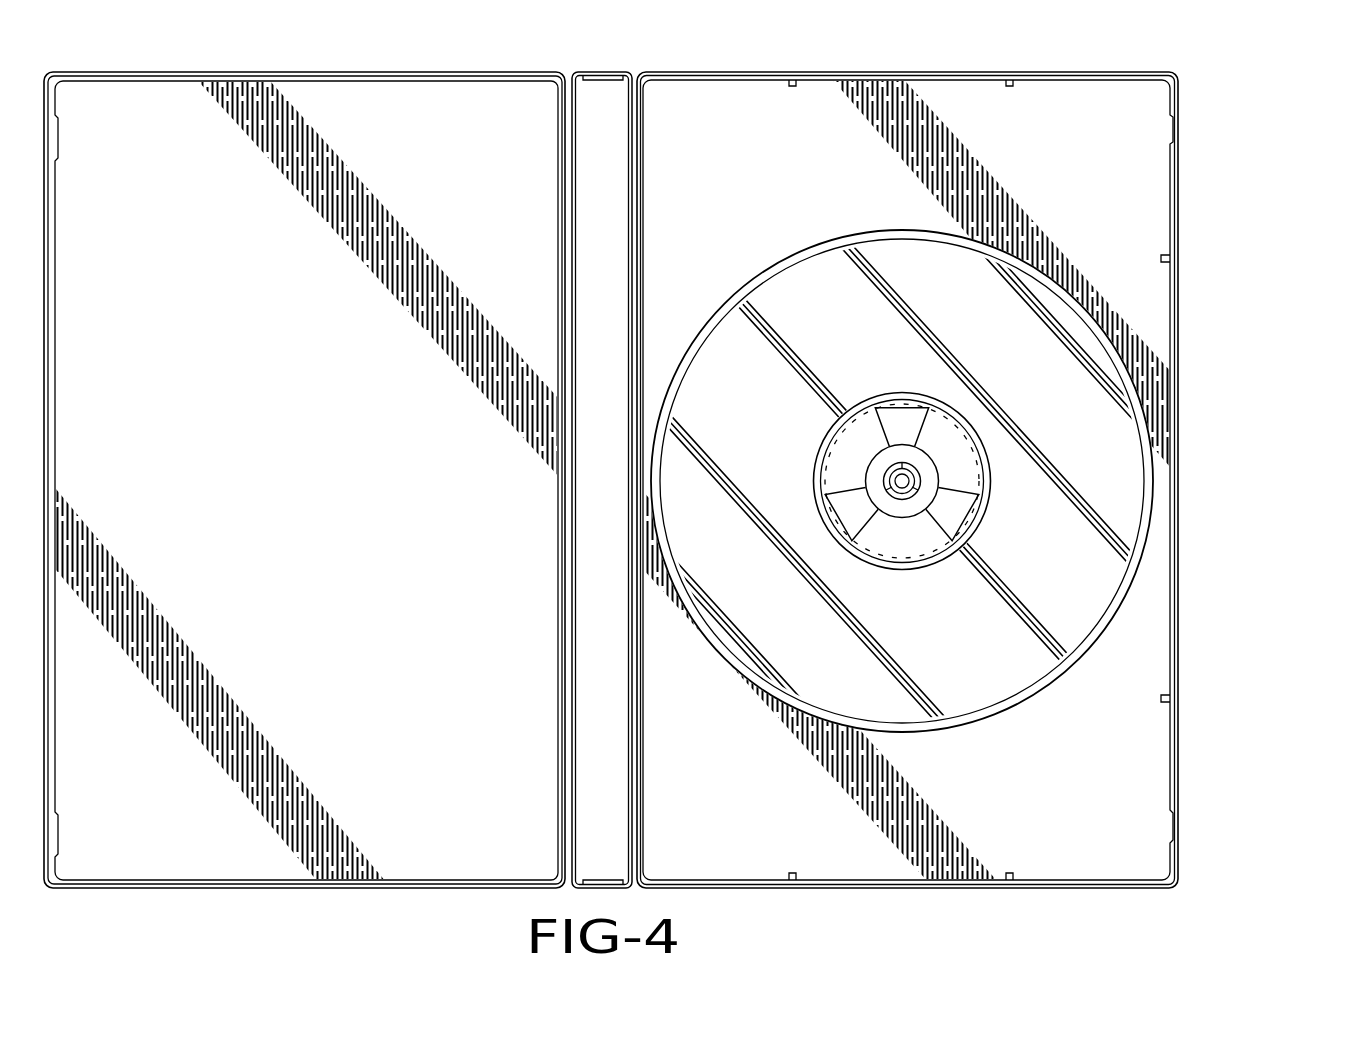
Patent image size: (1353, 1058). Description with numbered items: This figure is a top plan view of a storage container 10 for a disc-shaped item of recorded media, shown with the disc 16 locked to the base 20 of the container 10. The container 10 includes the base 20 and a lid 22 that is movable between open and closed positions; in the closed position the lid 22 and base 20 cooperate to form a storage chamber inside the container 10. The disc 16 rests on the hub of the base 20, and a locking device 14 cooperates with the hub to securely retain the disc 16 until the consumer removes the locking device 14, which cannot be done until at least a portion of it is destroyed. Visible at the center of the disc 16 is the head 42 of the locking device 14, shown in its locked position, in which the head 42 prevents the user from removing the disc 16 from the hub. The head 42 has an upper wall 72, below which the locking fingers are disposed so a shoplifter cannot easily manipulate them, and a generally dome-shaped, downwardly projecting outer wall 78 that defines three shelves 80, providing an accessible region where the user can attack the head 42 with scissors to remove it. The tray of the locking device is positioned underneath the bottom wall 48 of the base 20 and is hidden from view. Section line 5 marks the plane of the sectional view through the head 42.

The storage container 10 is at (1215, 122).
The lid 22 is at (126, 902).
The base 20 is at (1097, 903).
The bottom wall 48 is at (1133, 757).
The disc 16 is at (985, 692).
The locking device 14 is at (970, 405).
The head 42 is at (822, 428).
The outer wall 78 is at (948, 452).
The upper wall 72 is at (930, 481).
The shelves 80 is at (896, 404).
The section line 5- 5 is at (902, 355).